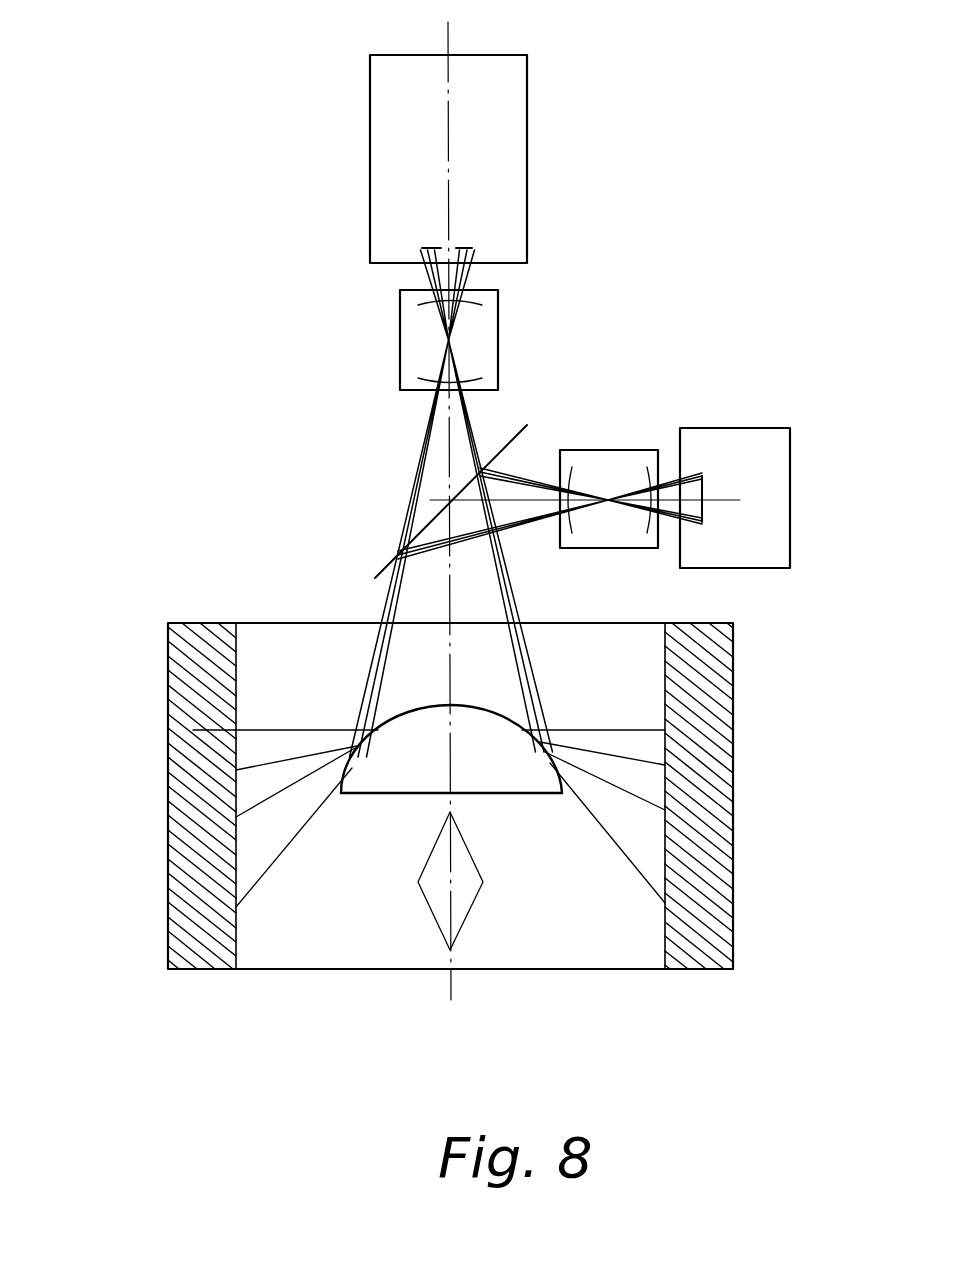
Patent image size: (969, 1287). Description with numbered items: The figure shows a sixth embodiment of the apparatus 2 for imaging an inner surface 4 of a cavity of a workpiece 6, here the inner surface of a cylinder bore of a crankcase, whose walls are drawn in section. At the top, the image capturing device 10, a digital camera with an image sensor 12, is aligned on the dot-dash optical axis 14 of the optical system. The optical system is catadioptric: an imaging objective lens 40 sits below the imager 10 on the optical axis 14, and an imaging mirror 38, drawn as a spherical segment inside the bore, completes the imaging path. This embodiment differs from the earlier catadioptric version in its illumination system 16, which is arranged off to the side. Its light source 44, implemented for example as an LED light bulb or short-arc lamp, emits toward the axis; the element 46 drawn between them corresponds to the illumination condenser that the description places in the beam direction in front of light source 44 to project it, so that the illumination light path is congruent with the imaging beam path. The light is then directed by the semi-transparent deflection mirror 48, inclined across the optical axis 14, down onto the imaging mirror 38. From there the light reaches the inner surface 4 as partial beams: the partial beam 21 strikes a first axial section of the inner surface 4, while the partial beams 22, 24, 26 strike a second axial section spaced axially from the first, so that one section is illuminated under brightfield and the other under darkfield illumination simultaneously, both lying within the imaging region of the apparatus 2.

The apparatus 2 is at (662, 176).
The inner surface 4 is at (665, 634).
The workpiece 6 is at (697, 618).
The image capturing device 10 is at (400, 98).
The image sensor 12 is at (441, 247).
The optical axis 14 is at (451, 40).
The illumination system 16 is at (845, 432).
The partial beam 21 is at (196, 730).
The partial beam 22 is at (236, 770).
The partial beam 24 is at (236, 817).
The partial beam 26 is at (236, 907).
The imaging mirror 38 is at (400, 777).
The imaging objective lens 40 is at (415, 356).
The light source 44 is at (720, 475).
The lens 46 is at (600, 477).
The semi-transparent deflection mirror 48 is at (432, 520).